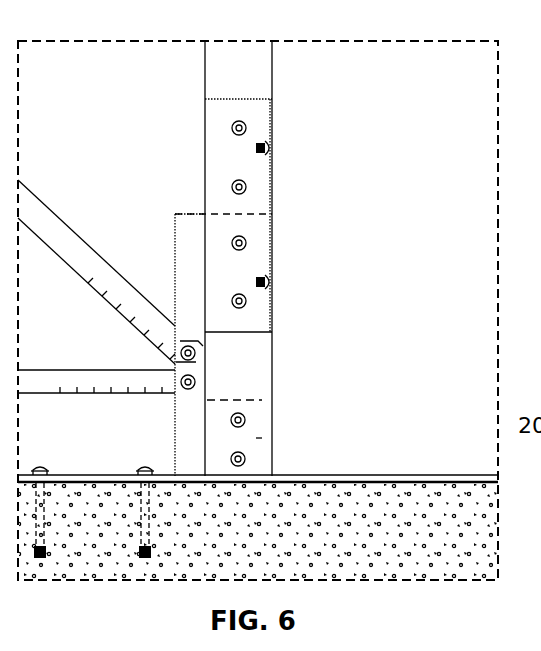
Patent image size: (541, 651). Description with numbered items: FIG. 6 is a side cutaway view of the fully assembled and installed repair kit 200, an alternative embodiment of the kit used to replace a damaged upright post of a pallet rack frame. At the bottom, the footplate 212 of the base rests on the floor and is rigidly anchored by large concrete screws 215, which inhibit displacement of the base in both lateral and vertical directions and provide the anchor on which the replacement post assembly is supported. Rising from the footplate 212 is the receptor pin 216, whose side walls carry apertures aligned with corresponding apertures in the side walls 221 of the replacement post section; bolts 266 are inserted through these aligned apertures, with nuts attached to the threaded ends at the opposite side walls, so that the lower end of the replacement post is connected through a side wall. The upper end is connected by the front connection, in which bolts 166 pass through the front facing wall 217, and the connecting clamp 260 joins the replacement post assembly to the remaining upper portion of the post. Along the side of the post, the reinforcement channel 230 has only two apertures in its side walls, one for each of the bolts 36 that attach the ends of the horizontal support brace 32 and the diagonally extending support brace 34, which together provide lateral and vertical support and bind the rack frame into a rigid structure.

The connecting clamp 260 is at (188, 125).
The bolts 166 is at (247, 129).
The reinforcement channel 230 is at (182, 230).
The repair kit 200 is at (318, 235).
The diagonally extending support braces 34 is at (43, 210).
The bolts 36 is at (185, 342).
The horizontal support braces 32 is at (38, 376).
The front facing wall 217 is at (273, 345).
The side walls 221 is at (253, 380).
The concrete screws 215 is at (45, 468).
The footplate 212 is at (92, 476).
The bolts 266 is at (246, 420).
The receptor pin 216 is at (256, 438).